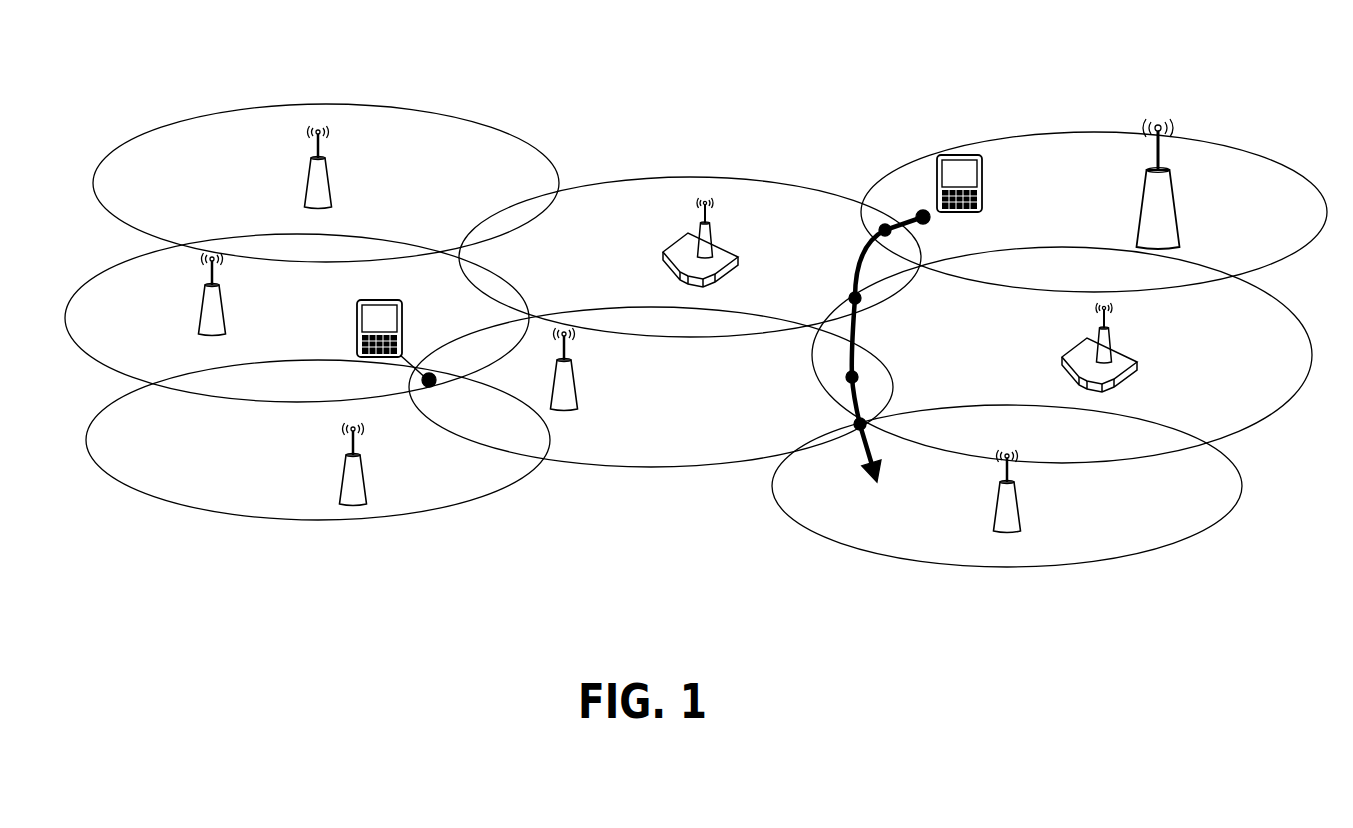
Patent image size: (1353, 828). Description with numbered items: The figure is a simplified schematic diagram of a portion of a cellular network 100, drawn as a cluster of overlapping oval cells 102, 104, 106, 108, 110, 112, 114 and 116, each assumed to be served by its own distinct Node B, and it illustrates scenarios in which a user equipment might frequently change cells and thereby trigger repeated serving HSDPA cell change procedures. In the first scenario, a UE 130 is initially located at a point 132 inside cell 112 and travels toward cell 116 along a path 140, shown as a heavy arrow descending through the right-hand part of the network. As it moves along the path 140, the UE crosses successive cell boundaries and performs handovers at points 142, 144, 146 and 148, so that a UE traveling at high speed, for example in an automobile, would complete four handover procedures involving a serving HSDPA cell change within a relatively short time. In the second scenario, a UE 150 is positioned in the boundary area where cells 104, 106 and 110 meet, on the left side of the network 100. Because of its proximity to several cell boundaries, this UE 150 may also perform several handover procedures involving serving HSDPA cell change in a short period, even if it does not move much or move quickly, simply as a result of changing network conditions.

The cellular network 100 is at (341, 73).
The cell 102 is at (320, 183).
The cell 104 is at (213, 312).
The cell 106 is at (355, 480).
The cell 108 is at (680, 248).
The cell 110 is at (578, 398).
The cell 112 is at (1167, 192).
The cell 114 is at (1137, 365).
The cell 116 is at (1018, 505).
The UE 130 is at (988, 179).
The point 132 is at (918, 213).
The path 140 is at (860, 359).
The point 142 is at (880, 230).
The point 144 is at (853, 296).
The point 146 is at (850, 377).
The point 148 is at (858, 423).
The UE 150 is at (372, 298).